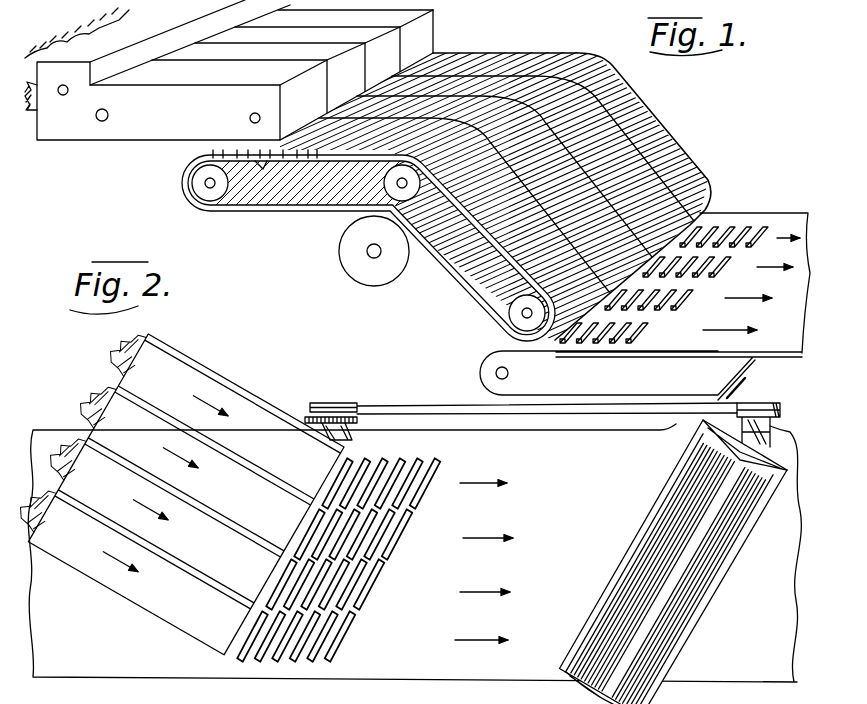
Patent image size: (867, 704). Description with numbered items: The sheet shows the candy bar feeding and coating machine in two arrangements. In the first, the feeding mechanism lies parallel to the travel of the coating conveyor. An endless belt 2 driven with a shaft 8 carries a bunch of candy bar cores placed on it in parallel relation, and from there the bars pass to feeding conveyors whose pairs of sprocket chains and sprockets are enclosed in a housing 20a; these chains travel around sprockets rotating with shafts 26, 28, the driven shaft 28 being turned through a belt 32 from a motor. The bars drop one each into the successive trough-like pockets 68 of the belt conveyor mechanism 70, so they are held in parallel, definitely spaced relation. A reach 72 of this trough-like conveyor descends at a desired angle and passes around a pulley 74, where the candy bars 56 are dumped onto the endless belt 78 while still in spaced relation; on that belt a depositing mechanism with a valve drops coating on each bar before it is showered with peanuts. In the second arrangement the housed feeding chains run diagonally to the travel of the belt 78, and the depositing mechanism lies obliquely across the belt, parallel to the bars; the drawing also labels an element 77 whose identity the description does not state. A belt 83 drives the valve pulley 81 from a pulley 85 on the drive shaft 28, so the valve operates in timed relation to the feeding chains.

In FIG. 1, the endless belt 2 is at (64, 36).
In FIG. 2, the endless belt 2 is at (327, 703).
In FIG. 1, the shaft 8 is at (62, 95).
In FIG. 1, the housing 20a is at (229, 70).
In FIG. 2, the housing 20a is at (186, 494).
In FIG. 1, the shaft 26 is at (100, 121).
In FIG. 1, the driven shaft 28 is at (250, 118).
In FIG. 2, the belt 32 is at (360, 426).
In FIG. 1, the candy bars 56 is at (594, 347).
In FIG. 2, the candy bars 56 is at (340, 640).
In FIG. 1, the trough-like pockets 68 is at (290, 158).
In FIG. 1, the belt conveyor mechanism 70 is at (290, 213).
In FIG. 1, the reach 72 is at (617, 115).
In FIG. 1, the pulley 74 is at (522, 315).
In FIG. 2, the roller 77 is at (770, 525).
In FIG. 1, the endless belt 78 is at (710, 338).
In FIG. 2, the pulley 81 is at (790, 408).
In FIG. 2, the belt 83 is at (743, 398).
In FIG. 2, the pulley 85 is at (328, 402).